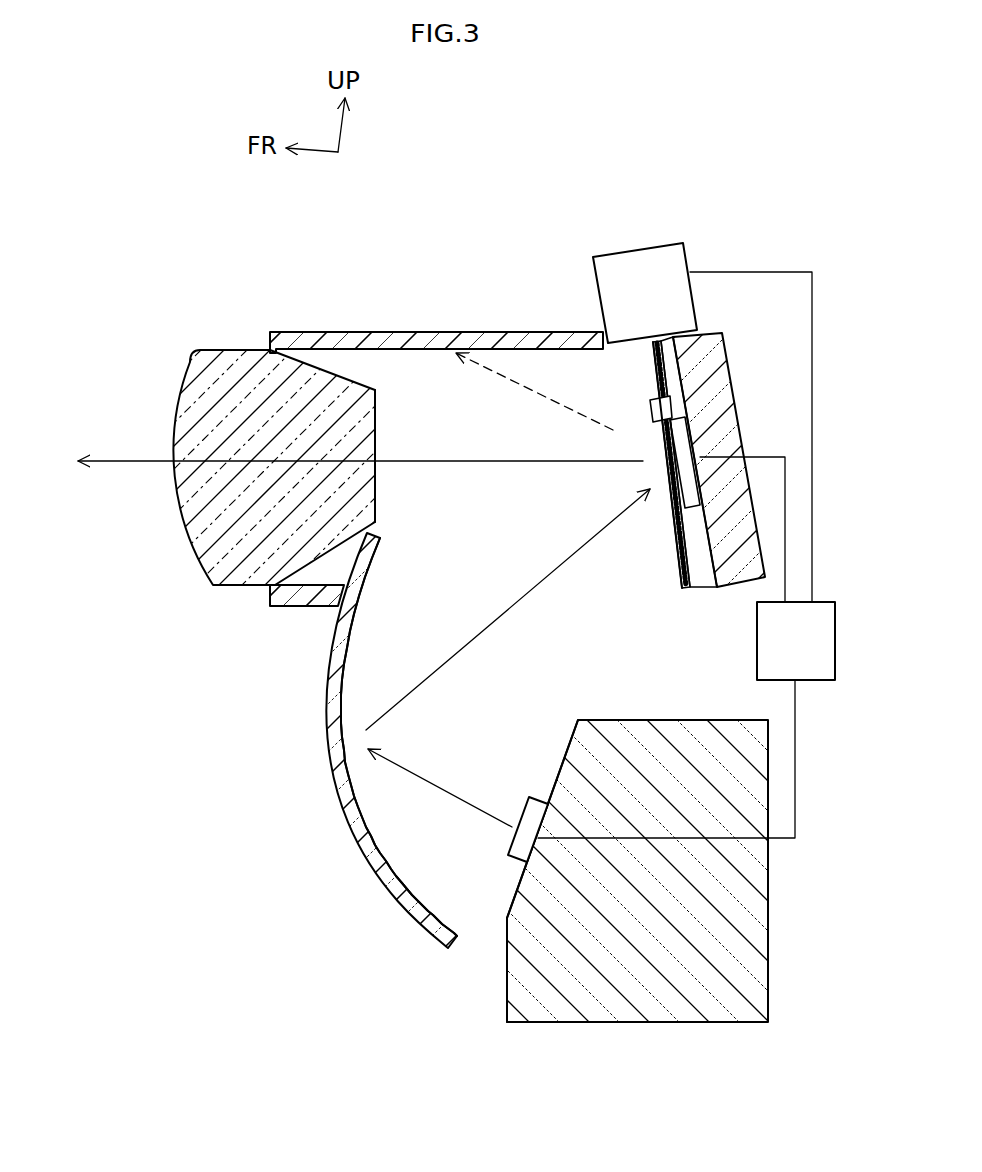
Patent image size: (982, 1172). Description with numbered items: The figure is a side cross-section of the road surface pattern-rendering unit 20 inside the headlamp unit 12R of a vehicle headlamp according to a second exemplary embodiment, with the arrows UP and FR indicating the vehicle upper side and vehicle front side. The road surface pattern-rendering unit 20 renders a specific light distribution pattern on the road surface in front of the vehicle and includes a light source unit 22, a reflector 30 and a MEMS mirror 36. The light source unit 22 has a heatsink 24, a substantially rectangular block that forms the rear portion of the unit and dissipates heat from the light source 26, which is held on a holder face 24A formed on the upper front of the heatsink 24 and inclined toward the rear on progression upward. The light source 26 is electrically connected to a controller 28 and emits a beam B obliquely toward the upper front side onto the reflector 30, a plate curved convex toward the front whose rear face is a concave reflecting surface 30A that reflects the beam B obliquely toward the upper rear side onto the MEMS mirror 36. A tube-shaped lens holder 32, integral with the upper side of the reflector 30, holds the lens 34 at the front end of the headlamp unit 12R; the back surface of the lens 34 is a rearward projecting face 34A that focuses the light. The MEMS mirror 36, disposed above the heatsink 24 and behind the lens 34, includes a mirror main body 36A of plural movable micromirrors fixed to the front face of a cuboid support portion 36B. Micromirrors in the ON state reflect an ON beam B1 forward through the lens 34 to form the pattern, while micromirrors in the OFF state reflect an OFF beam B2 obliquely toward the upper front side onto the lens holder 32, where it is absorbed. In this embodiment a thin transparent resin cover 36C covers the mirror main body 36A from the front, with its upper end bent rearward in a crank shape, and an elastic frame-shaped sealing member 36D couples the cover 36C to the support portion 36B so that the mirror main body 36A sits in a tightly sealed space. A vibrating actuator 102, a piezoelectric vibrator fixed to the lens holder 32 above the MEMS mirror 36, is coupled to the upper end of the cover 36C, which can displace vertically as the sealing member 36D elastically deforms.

The headlamp unit 12R is at (186, 256).
The road surface pattern-rendering unit 20 is at (155, 336).
The light source unit 22 is at (505, 1026).
The heatsink 24 is at (636, 1024).
The holder face 24A is at (566, 758).
The light source 26 is at (520, 805).
The controller 28 is at (822, 682).
The reflector 30 is at (350, 829).
The reflecting surface 30A is at (348, 642).
The lens holder 32 is at (373, 331).
The lens 34 is at (178, 522).
The projecting face 34A is at (380, 432).
The MEMS mirror 36 is at (670, 443).
The mirror main body 36A is at (652, 475).
The support portion 36B is at (740, 420).
The cover 36C is at (668, 545).
The sealing member 36D is at (660, 340).
The vibrating actuator 102 is at (622, 250).
The beam B is at (505, 612).
The ON beam B1 is at (459, 463).
The OFF beam B2 is at (520, 385).